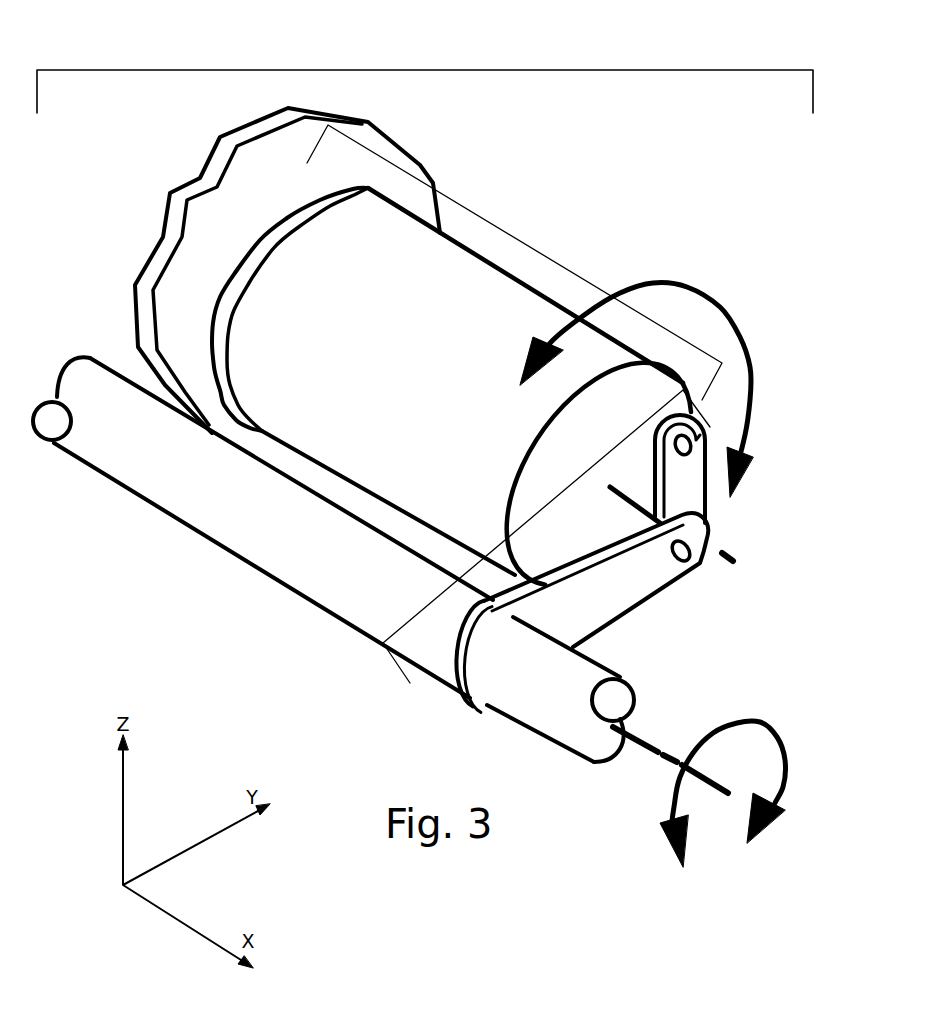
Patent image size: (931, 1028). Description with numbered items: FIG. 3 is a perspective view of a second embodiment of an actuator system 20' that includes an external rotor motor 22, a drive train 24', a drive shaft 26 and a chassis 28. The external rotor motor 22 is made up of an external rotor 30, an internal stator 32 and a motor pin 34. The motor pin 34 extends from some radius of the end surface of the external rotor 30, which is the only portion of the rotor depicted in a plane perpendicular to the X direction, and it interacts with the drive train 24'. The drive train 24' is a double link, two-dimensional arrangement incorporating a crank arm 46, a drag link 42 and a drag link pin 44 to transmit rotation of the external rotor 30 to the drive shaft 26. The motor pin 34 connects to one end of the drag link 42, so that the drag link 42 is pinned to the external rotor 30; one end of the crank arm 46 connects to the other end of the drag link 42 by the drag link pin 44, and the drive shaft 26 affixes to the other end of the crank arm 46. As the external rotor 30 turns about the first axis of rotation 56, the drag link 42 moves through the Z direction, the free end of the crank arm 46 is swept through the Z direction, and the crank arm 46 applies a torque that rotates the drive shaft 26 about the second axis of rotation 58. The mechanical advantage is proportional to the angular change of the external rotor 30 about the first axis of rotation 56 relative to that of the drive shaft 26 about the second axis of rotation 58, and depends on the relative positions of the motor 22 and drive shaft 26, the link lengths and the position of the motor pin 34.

The actuator system 20' is at (425, 59).
The external rotor motor 22 is at (520, 240).
The drive train 24' is at (546, 536).
The drive shaft 26 is at (284, 546).
The chassis 28 is at (263, 197).
The external rotor 30 is at (388, 390).
The internal stator 32 is at (243, 263).
The motor pin 34 is at (692, 442).
The drag link 42 is at (668, 500).
The drag link pin 44 is at (686, 561).
The crank arm 46 is at (591, 605).
The first axis of rotation 56 is at (733, 551).
The second axis of rotation 58 is at (645, 750).